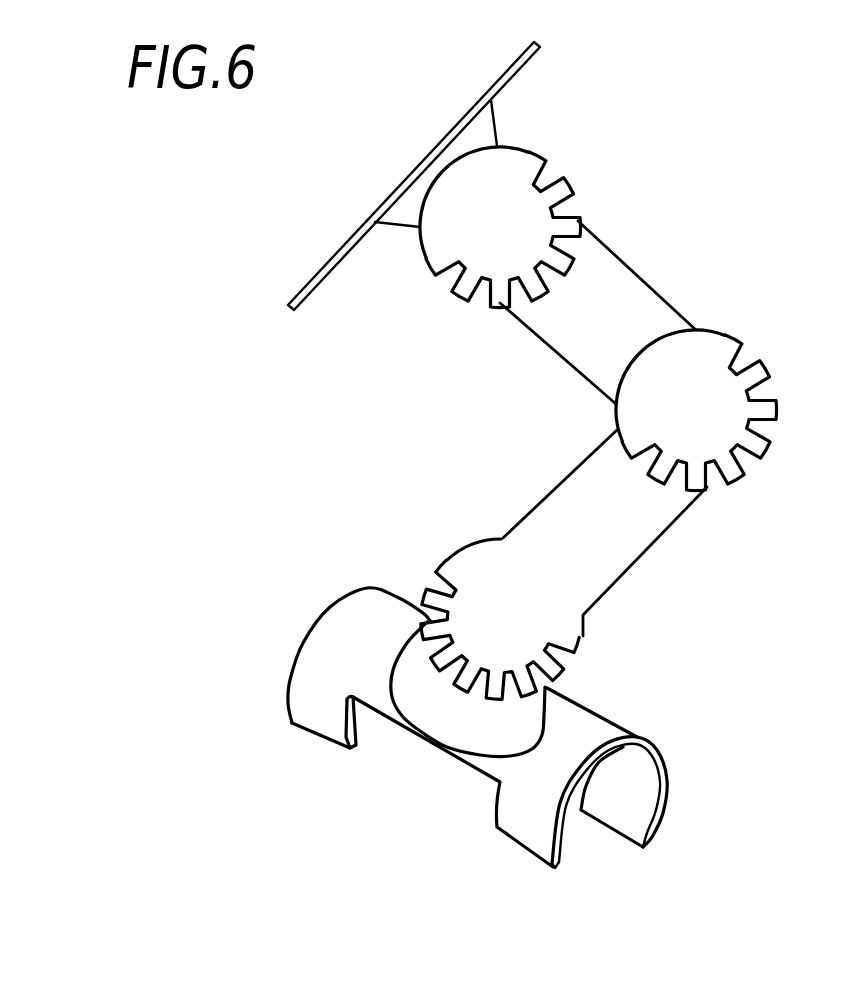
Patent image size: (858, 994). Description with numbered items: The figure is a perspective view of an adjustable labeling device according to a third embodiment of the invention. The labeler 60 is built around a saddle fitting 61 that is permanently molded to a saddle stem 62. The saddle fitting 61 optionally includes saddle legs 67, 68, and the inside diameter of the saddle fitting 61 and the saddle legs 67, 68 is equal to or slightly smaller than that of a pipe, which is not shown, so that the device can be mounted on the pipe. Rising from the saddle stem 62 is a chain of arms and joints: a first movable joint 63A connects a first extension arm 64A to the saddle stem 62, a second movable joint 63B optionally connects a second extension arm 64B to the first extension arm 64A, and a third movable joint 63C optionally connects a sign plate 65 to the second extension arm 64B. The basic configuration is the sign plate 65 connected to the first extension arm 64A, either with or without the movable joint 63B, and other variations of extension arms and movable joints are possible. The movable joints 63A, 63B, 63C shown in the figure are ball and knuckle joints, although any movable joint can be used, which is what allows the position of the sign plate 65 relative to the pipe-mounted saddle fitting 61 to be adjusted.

The labeler 60 is at (300, 408).
The saddle fitting 61 is at (589, 720).
The saddle stem 62 is at (436, 705).
The first movable joint 63A is at (475, 545).
The second movable joint 63B is at (699, 331).
The third movable joint 63C is at (520, 148).
The first extension arm 64A is at (571, 470).
The second extension arm 64B is at (579, 337).
The sign plate 65 is at (430, 156).
The saddle leg 67 is at (330, 712).
The saddle leg 68 is at (523, 820).